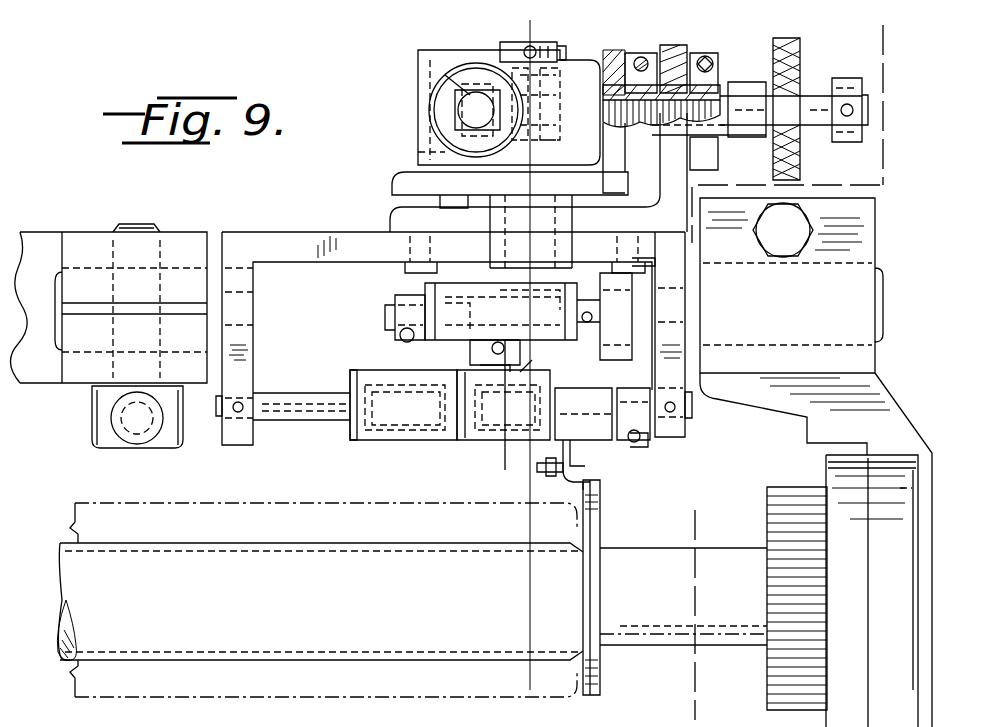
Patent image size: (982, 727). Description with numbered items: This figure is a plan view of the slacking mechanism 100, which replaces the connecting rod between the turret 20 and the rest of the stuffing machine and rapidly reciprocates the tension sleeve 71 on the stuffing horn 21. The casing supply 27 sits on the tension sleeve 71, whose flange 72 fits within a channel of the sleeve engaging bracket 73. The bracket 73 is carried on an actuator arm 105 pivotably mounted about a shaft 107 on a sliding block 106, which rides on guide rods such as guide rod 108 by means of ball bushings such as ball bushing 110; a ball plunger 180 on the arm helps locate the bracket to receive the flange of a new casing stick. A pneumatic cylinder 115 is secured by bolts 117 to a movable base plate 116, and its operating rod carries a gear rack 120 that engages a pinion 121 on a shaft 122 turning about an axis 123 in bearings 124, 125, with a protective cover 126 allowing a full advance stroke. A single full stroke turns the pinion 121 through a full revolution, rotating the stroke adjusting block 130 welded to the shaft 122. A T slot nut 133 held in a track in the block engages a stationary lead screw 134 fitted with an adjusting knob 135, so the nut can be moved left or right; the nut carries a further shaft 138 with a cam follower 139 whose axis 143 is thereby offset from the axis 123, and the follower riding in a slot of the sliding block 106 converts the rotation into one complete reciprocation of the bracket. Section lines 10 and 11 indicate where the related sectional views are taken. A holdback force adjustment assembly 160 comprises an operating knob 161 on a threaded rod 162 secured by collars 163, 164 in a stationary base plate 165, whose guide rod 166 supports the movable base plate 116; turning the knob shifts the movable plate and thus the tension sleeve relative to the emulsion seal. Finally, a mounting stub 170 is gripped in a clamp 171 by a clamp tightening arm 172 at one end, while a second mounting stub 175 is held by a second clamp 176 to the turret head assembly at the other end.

The section line 10- 10 is at (850, 23).
The section line 11- 11 is at (223, 407).
The turret 20 is at (838, 462).
The stuffing horn 21 is at (650, 645).
The casing supply 27 is at (192, 500).
The tension sleeve 71 is at (352, 543).
The flange 72 is at (596, 587).
The sleeve engaging bracket 73 is at (605, 529).
The slacking mechanism 100 is at (620, 452).
The actuator arm 105 is at (560, 486).
The sliding block 106 is at (353, 372).
The shaft 107 is at (652, 432).
The guide rod 108 is at (328, 427).
The ball bushing 110 is at (352, 451).
The pneumatic cylinder 115 is at (418, 113).
The base plate 116 is at (392, 190).
The bolts 117 is at (418, 152).
The gear rack 120 is at (437, 83).
The pinion 121 is at (468, 62).
The shaft 122 is at (520, 40).
The axis 123 is at (530, 243).
The bearing 124 is at (572, 35).
The bearing 125 is at (560, 186).
The protective cover 126 is at (458, 101).
The stroke adjusting block 130 is at (430, 285).
The T slot nut 133 is at (470, 348).
The lead screw 134 is at (395, 313).
The adjusting knob 135 is at (636, 305).
The shaft 138 is at (524, 368).
The cam follower 139 is at (556, 378).
The axis 143 is at (500, 448).
The holdback force adjustment assembly 160 is at (845, 58).
The operating knob 161 is at (812, 33).
The threaded rod 162 is at (618, 35).
The collar 163 is at (648, 55).
The collar 164 is at (714, 60).
The stationary base plate 165 is at (390, 219).
The guide rod 166 is at (816, 125).
The mounting stub 170 is at (216, 247).
The clamp 171 is at (85, 232).
The clamp tightening arm 172 is at (90, 430).
The mounting stub 175 is at (884, 300).
The clamp 176 is at (856, 222).
The ball plunger 180 is at (535, 466).